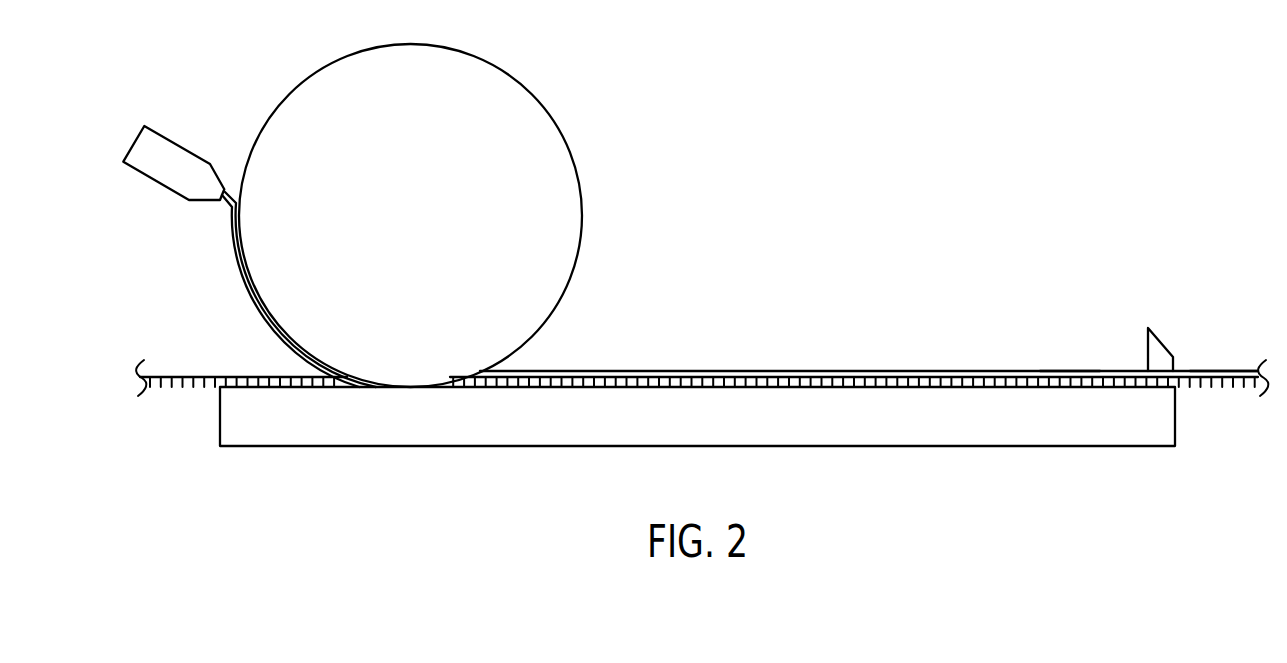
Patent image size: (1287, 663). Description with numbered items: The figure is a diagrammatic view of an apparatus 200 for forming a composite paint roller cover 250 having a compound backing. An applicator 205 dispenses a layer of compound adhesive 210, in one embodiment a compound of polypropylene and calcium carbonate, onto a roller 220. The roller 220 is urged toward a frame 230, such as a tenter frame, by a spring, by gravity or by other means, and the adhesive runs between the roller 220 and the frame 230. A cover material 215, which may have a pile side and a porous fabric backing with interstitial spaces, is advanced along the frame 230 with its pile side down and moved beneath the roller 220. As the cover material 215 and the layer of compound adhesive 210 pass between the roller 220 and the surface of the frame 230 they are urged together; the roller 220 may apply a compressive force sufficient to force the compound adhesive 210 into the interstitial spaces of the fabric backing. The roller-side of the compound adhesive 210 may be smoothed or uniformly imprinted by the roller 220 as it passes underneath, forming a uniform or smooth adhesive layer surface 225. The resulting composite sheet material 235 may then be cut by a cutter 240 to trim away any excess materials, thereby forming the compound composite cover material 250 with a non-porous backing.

The apparatus 200 is at (770, 158).
The applicator 205 is at (175, 157).
The compound adhesive 210 is at (236, 257).
The cover material 215 is at (188, 379).
The roller 220 is at (425, 219).
The adhesive layer surface 225 is at (542, 371).
The frame 230 is at (714, 431).
The composite sheet material 235 is at (1063, 371).
The cutter 240 is at (1162, 343).
The composite paint roller cover 250 is at (1213, 371).